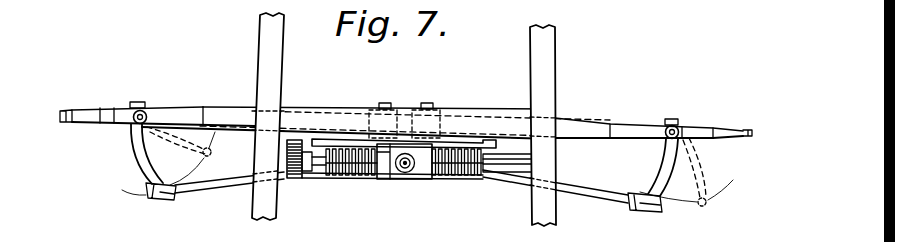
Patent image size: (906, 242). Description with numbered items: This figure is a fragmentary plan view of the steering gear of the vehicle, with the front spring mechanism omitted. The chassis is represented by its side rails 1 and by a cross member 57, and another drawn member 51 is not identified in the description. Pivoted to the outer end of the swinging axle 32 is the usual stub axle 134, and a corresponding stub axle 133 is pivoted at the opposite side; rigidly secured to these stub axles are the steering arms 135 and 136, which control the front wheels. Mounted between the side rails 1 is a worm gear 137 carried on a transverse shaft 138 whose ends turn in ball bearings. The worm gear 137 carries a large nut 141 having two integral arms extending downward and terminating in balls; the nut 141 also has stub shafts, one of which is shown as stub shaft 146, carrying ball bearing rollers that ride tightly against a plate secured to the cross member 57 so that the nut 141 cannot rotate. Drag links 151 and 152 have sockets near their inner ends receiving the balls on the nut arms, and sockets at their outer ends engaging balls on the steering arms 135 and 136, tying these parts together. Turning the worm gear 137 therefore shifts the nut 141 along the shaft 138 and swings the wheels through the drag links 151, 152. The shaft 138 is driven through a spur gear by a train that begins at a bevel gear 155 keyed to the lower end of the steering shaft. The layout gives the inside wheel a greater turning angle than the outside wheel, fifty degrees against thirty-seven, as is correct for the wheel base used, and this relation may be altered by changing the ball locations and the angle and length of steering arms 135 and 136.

The side rail 1 is at (272, 46).
The swinging axle 32 is at (231, 100).
The right arm 51 is at (600, 113).
The cross member 57 is at (318, 110).
The stub axle 133 is at (707, 113).
The stub axle 134 is at (88, 125).
The steering arm 135 is at (670, 165).
The steering arm 136 is at (145, 169).
The worm gear 137 is at (463, 176).
The shaft 138 is at (507, 180).
The nut 141 is at (358, 174).
The stub shaft 146 is at (405, 182).
The drag link 151 is at (215, 188).
The drag link 152 is at (597, 197).
The bevel gear 155 is at (297, 183).